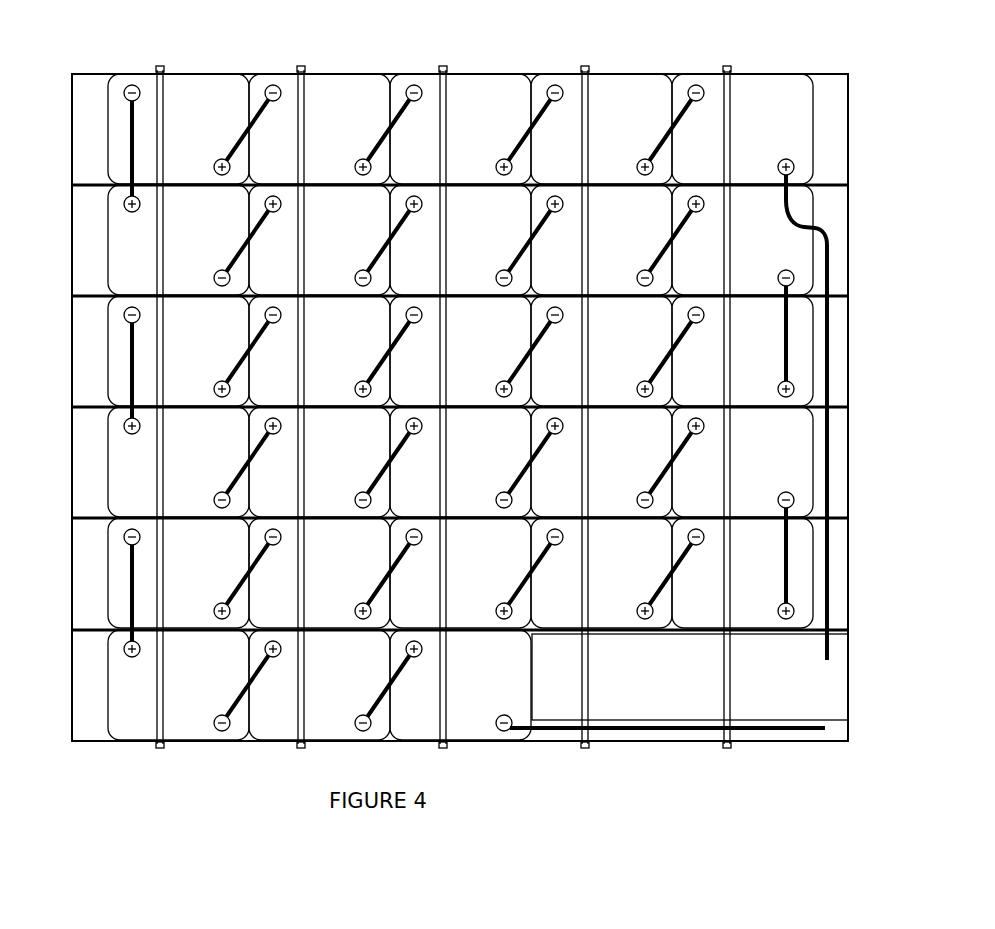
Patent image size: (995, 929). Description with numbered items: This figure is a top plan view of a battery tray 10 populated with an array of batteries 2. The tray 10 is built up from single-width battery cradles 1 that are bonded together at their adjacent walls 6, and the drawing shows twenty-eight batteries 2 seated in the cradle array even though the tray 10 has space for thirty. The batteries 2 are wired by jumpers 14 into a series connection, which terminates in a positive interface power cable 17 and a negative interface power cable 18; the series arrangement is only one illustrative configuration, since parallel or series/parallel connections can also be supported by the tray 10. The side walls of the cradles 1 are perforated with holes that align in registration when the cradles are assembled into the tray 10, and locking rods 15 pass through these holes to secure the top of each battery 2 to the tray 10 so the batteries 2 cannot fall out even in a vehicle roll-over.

The battery cradle 1 is at (72, 129).
The battery 2 is at (212, 88).
The adjacent wall 6 is at (72, 185).
The battery tray 10 is at (820, 63).
The jumper 14 is at (528, 125).
The locking rod 15 is at (160, 68).
The interface power cable (+) 17 is at (830, 284).
The interface power cable (−) 18 is at (788, 733).